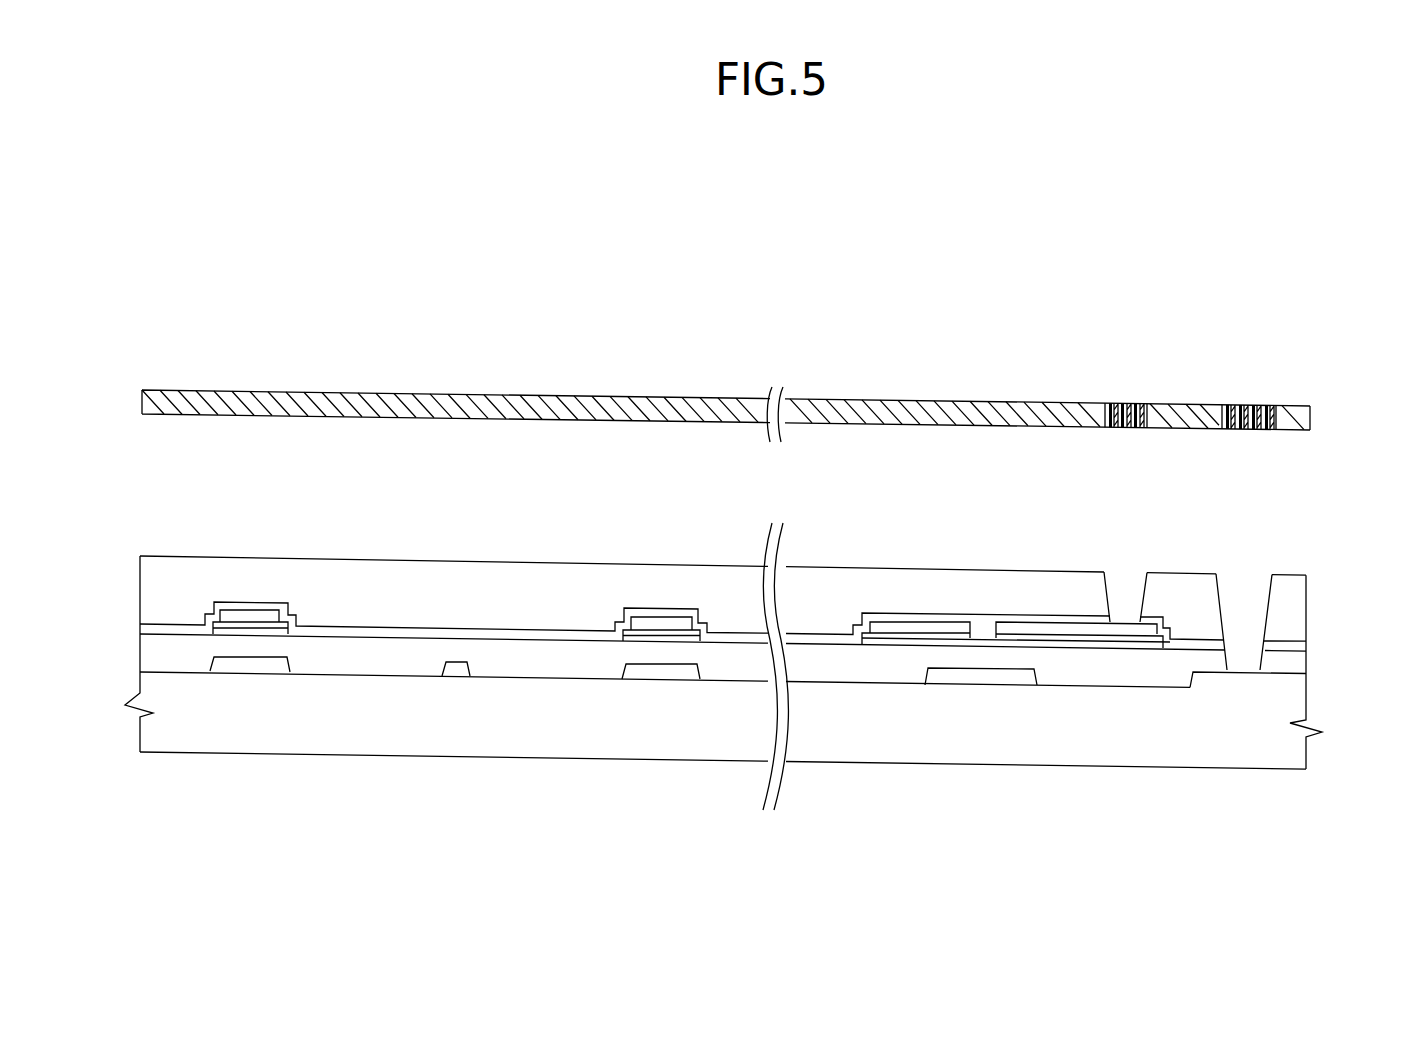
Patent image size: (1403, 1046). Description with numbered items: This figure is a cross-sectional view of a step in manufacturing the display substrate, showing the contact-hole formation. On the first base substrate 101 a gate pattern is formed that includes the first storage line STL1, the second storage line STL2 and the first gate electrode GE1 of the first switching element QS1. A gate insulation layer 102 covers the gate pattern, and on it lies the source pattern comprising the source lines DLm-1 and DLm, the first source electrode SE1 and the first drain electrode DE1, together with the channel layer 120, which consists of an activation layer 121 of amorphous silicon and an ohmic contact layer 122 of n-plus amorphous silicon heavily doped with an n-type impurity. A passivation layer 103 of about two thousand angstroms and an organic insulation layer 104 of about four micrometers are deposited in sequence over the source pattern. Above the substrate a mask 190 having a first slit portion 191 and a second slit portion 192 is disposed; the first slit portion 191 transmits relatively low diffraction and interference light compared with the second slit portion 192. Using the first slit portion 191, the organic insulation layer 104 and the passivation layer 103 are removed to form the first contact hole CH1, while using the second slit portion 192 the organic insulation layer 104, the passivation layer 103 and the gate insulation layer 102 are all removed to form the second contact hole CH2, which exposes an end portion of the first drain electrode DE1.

The mask 190 is at (1297, 418).
The first slit portion 191 is at (1126, 404).
The second slit portion 192 is at (1244, 405).
The first base substrate 101 is at (1297, 744).
The gate insulation layer 102 is at (1297, 665).
The passivation layer 103 is at (1297, 644).
The organic insulation layer 104 is at (1297, 608).
The second storage line STL2 is at (235, 665).
The (m-1)th source line DLm-1 is at (252, 618).
The first storage line STL1 is at (455, 668).
The (m)th source line DLm is at (661, 623).
The first source electrode SE1 is at (896, 628).
The first gate electrode GE1 is at (978, 675).
The first drain electrode DE1 is at (1052, 630).
The first switching element QS1 is at (1013, 757).
The channel layer 120 is at (1016, 761).
The activation layer 121 is at (1102, 645).
The ohmic contact layer 122 is at (1148, 630).
The first contact hole CH1 is at (1131, 597).
The second contact hole CH2 is at (1250, 597).